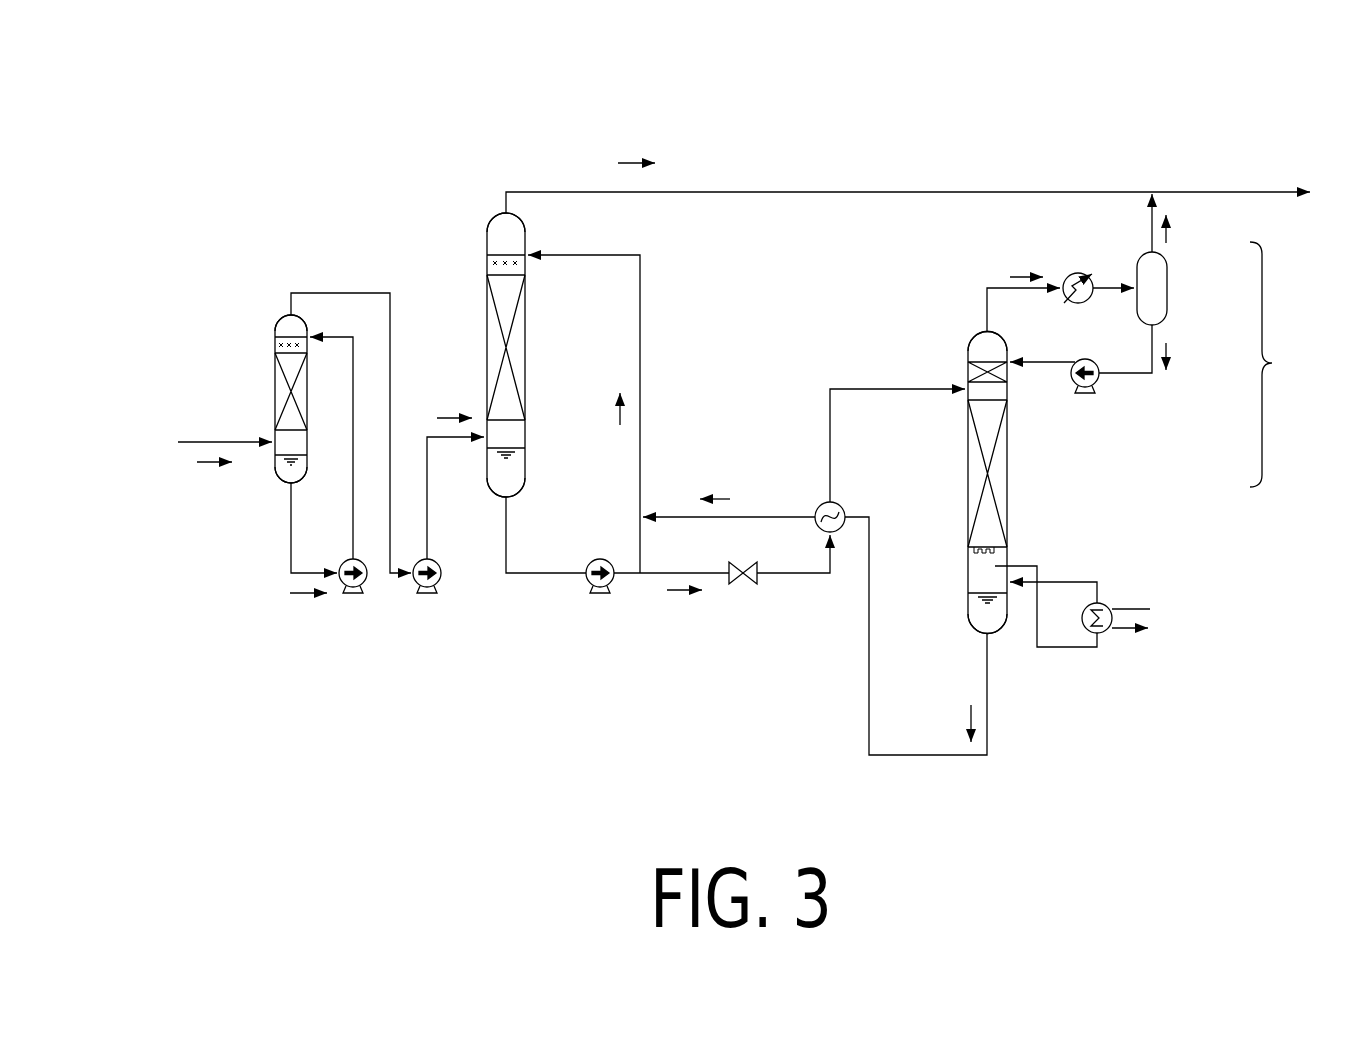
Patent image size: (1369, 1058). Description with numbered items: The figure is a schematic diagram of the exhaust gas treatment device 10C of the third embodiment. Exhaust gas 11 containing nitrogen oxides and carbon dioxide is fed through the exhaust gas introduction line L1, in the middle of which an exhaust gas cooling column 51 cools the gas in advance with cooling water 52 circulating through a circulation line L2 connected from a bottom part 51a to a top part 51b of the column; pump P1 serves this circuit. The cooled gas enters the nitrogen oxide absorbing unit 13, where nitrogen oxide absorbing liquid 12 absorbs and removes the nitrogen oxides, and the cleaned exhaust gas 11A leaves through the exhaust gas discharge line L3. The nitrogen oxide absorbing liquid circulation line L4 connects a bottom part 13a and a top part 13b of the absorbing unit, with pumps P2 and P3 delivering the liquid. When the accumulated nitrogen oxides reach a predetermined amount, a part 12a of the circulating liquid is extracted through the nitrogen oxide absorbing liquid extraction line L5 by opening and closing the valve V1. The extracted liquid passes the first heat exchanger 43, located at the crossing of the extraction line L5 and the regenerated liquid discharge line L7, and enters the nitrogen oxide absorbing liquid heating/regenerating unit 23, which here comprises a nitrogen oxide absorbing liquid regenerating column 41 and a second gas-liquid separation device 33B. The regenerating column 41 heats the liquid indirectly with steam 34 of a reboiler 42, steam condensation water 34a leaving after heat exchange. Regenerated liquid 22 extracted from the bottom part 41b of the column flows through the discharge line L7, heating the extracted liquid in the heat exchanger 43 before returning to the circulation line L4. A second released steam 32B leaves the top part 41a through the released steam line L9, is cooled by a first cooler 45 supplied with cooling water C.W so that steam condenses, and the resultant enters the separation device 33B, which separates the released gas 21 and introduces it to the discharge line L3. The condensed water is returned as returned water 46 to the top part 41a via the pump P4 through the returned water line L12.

The exhaust gas treatment device 10C is at (742, 74).
The exhaust gas 11 is at (205, 466).
The exhaust gas 11A is at (633, 160).
The nitrogen oxide absorbing liquid 12 is at (612, 417).
The part of nitrogen oxide absorbing liquid 12a is at (676, 598).
The nitrogen oxide absorbing unit 13 is at (480, 198).
The bottom part 13a is at (527, 478).
The top part 13b is at (487, 230).
The released gas 21 is at (1168, 230).
The nitrogen oxide absorbing liquid regenerated liquid 22 is at (722, 496).
The nitrogen oxide absorbing liquid heating/regenerating unit 23 is at (1280, 364).
The second released steam 32B is at (1028, 272).
The second gas-liquid separation device 33B is at (1168, 270).
The steam 34 is at (1138, 608).
The steam condensation water 34a is at (1152, 636).
The nitrogen oxide absorbing liquid regenerating column 41 is at (1012, 486).
The top part 41a is at (968, 350).
The bottom part 41b is at (997, 637).
The reboiler 42 is at (1100, 602).
The first heat exchanger 43 is at (845, 506).
The first cooler 45 is at (1080, 272).
The returned water 46 is at (1168, 350).
The exhaust gas cooling column 51 is at (283, 290).
The bottom part 51a is at (277, 487).
The top part 51b is at (275, 333).
The cooling water 52 is at (302, 598).
The cooling water C.W is at (1104, 269).
The exhaust gas introduction line L1 is at (210, 440).
The circulation line L2 is at (354, 505).
The exhaust gas discharge line L3 is at (778, 190).
The nitrogen oxide absorbing liquid circulation line L4 is at (522, 578).
The nitrogen oxide absorbing liquid extraction line L5 is at (794, 578).
The regenerated liquid discharge line L7 is at (662, 514).
The released steam line L9 is at (990, 287).
The returned water line L12 is at (1081, 381).
The liquid delivery pump P1 is at (353, 594).
The liquid delivery pump P2 is at (427, 594).
The liquid delivery pump P3 is at (600, 594).
The pump P4 is at (1085, 395).
The valve V1 is at (742, 590).